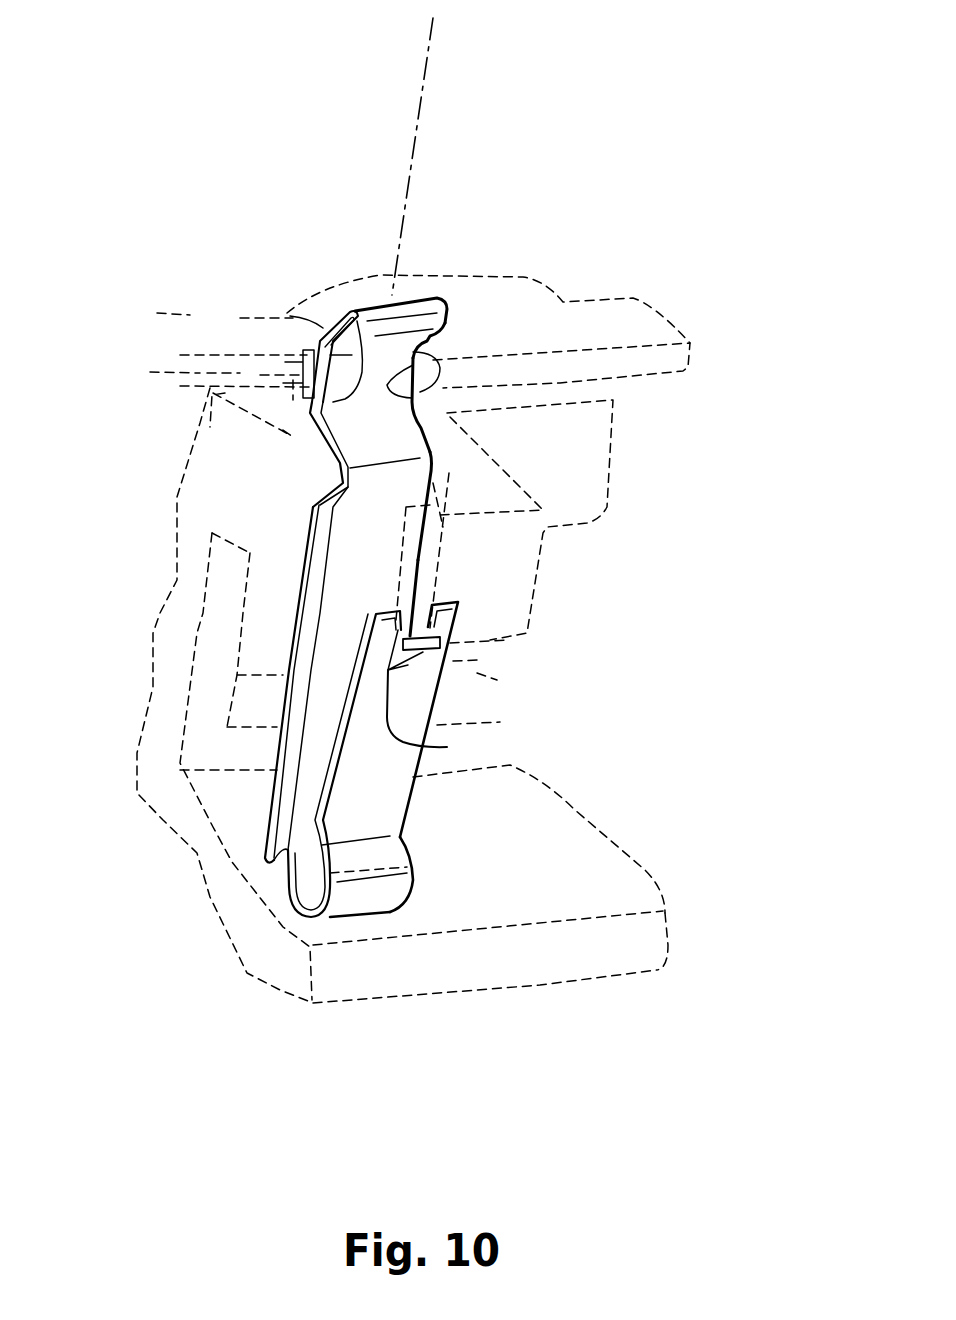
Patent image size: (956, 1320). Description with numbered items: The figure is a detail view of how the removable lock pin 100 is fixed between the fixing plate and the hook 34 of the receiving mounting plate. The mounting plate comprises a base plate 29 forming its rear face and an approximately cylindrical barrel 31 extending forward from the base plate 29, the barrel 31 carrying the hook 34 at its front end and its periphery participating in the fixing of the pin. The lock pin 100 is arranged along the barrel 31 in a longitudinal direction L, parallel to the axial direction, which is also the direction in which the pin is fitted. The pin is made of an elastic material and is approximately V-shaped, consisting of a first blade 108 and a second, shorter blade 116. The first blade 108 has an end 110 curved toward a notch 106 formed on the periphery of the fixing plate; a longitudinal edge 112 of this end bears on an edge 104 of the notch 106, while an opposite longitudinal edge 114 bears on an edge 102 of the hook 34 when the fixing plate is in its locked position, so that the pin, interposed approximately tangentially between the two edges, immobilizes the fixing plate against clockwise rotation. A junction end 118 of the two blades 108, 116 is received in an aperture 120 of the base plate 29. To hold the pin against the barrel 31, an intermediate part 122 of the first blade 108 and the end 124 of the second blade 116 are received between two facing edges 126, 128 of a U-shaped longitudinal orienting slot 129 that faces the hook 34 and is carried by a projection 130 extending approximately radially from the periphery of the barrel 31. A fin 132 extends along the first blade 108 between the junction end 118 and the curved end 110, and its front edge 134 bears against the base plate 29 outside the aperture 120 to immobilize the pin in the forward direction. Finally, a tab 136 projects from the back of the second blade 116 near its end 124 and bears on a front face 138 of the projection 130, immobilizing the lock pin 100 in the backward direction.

The longitudinal direction L is at (418, 132).
The base plate 29 is at (507, 908).
The barrel 31 is at (573, 432).
The hook 34 is at (167, 340).
The lock pin 100 is at (380, 544).
The edge of the hook 102 is at (360, 400).
The edge of the notch 104 is at (420, 348).
The notch 106 is at (428, 380).
The first blade 108 is at (347, 597).
The curved end 110 is at (363, 373).
The longitudinal edge 112 is at (455, 462).
The opposite longitudinal edge 114 is at (307, 368).
The second blade 116 is at (420, 700).
The junction end 118 is at (360, 895).
The aperture 120 is at (418, 860).
The intermediate part 122 is at (347, 567).
The end of the second blade 124 is at (453, 622).
The edge of the orienting slot 126 is at (327, 473).
The edge of the orienting slot 128 is at (450, 490).
The orienting slot 129 is at (447, 384).
The projection 130 is at (486, 573).
The fin 132 is at (276, 804).
The front edge 134 is at (277, 883).
The tab 136 is at (447, 749).
The front face 138 is at (493, 642).